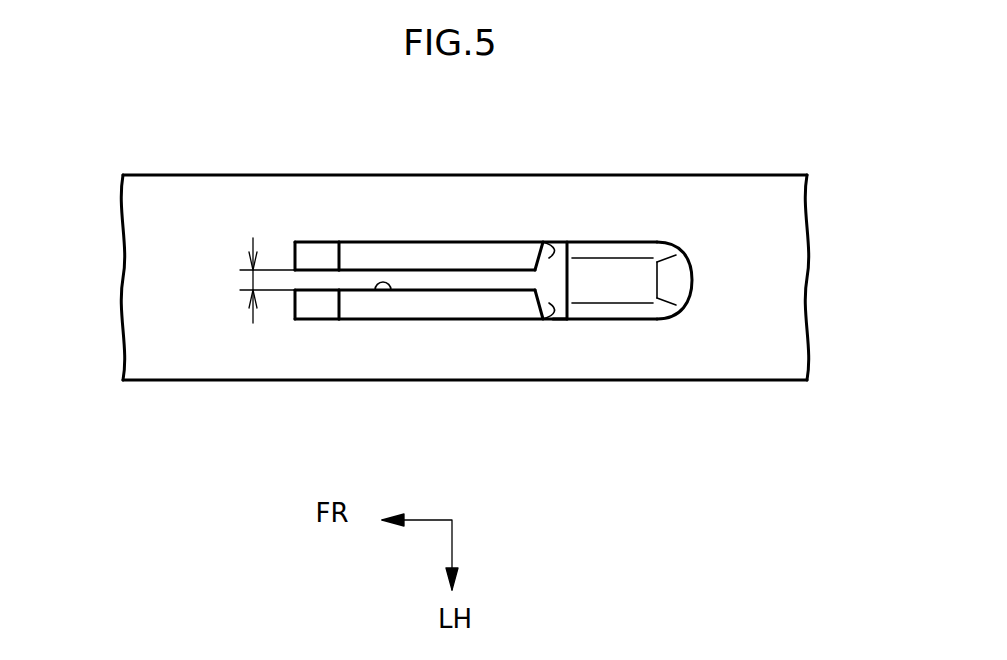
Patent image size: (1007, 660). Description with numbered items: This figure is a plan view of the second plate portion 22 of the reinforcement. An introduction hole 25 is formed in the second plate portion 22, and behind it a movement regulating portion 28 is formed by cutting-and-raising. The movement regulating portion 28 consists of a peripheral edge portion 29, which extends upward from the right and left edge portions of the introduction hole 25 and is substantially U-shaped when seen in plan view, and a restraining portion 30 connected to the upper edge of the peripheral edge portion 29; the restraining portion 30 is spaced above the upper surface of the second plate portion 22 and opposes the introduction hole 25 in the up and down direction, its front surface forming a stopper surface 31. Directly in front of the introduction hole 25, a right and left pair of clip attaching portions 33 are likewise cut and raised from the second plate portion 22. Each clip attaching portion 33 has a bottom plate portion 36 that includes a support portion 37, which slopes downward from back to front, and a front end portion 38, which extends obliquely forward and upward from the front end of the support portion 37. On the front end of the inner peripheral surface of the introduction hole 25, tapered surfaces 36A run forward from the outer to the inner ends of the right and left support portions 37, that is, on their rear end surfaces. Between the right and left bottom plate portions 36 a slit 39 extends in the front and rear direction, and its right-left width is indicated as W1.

The second plate portion 22 is at (758, 190).
The introduction hole 25 is at (553, 310).
The movement regulating portion 28 is at (678, 278).
The peripheral edge portion 29 is at (635, 248).
The restraining portion 30 is at (633, 287).
The stopper surface 31 is at (563, 272).
The clip attaching portion 33 is at (498, 280).
The bottom plate portion 36 is at (440, 252).
The tapered surface 36A is at (552, 255).
The support portion 37 is at (488, 252).
The front end portion 38 is at (317, 248).
The slit 39 is at (391, 290).
The width of the slit W1 is at (245, 282).